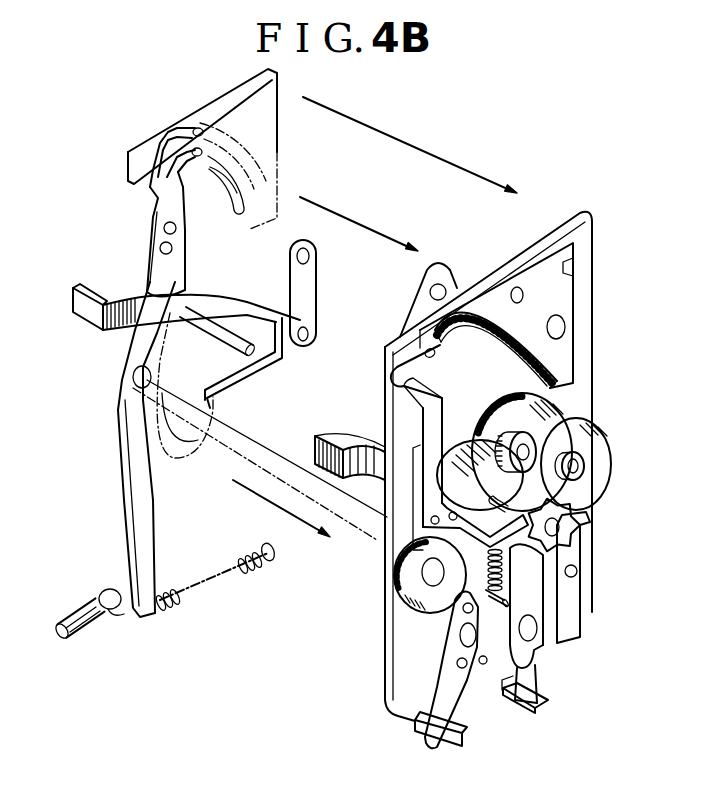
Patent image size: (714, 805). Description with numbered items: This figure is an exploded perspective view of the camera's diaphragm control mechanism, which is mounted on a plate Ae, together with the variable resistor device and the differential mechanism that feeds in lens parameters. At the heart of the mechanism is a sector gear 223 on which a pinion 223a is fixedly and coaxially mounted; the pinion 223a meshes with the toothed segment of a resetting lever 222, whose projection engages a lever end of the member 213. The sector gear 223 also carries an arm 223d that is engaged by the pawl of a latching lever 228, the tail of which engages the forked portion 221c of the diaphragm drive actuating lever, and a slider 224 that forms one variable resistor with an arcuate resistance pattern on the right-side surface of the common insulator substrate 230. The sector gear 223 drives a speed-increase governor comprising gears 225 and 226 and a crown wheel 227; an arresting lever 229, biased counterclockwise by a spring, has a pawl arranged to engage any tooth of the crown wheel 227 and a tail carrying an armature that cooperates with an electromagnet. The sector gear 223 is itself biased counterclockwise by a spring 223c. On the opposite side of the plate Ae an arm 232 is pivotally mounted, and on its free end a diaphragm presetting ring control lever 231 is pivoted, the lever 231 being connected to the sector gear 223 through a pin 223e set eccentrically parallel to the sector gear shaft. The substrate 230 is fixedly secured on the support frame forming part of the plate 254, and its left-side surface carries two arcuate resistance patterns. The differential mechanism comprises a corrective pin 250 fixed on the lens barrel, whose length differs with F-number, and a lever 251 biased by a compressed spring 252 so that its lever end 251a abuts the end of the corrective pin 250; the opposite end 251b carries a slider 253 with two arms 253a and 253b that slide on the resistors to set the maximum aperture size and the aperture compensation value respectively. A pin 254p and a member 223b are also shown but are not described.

The stopper tab 213 is at (462, 743).
The forked portion 221c is at (540, 703).
The resetting lever 222 is at (445, 639).
The sector gear 223 is at (430, 537).
The pinion 223a is at (398, 578).
The cam disc 223b is at (463, 437).
The spring 223c is at (470, 580).
The arm 223d is at (412, 603).
The pin 223e is at (216, 328).
The slider 224 is at (393, 398).
The gear 225 is at (532, 450).
The gear 226 is at (600, 462).
The crown wheel 227 is at (575, 519).
The latching lever 228 is at (538, 673).
The arresting lever 229 is at (570, 593).
The common insulator substrate 230 is at (278, 136).
The diaphragm presetting ring control lever 231 is at (80, 313).
The arm 232 is at (312, 286).
The corrective pin 250 is at (97, 627).
The lever 251 is at (152, 504).
The lever end 251a is at (108, 594).
The opposite end 251b is at (150, 248).
The spring 252 is at (221, 586).
The slider 253 is at (165, 188).
The arm 253a is at (198, 157).
The arm 253b is at (197, 129).
The plate 254 is at (583, 390).
The pin 254p is at (483, 665).
The plate Ae is at (567, 223).